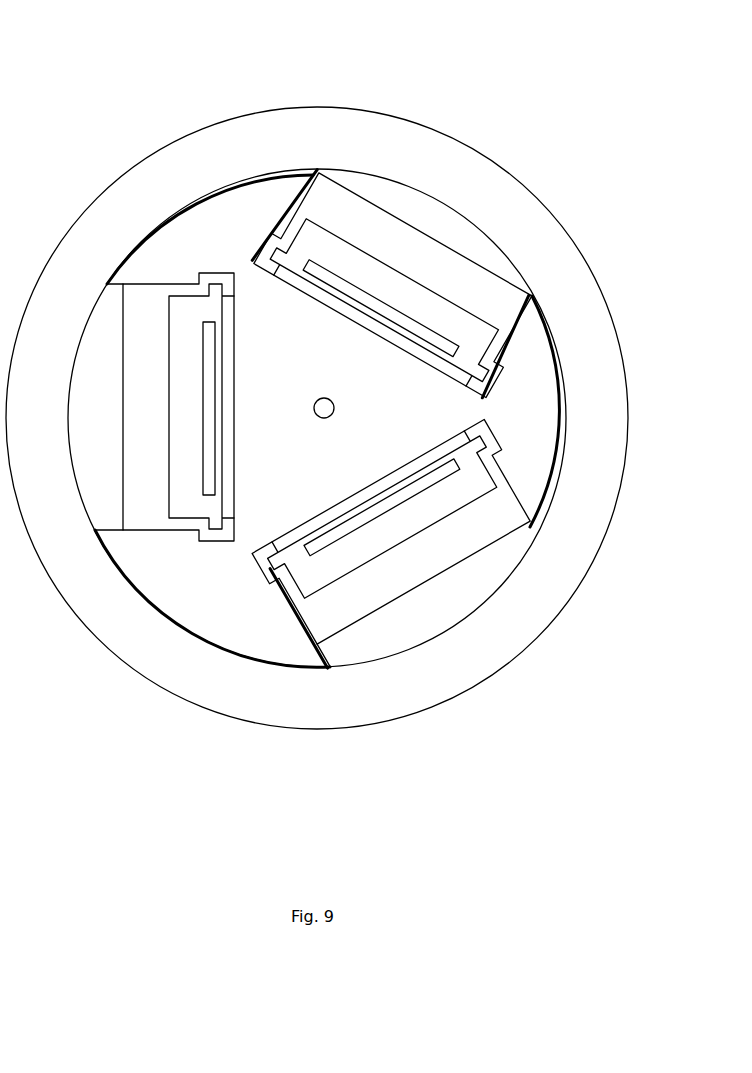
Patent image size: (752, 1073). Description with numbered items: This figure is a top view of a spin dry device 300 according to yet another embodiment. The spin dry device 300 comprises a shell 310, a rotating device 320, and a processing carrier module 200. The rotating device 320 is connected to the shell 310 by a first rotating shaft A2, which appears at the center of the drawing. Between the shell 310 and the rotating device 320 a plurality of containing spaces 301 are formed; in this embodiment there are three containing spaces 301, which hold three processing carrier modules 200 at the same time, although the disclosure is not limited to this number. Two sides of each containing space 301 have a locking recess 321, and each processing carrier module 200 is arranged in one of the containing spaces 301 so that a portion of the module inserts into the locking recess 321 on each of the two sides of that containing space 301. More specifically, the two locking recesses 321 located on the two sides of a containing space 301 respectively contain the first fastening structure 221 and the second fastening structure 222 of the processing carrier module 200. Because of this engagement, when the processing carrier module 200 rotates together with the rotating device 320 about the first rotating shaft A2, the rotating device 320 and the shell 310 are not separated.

The spin dry device 300 is at (66, 43).
The shell 310 is at (146, 187).
The rotating device 320 is at (222, 243).
The locking recess 321 is at (258, 232).
The processing carrier module 200 is at (347, 205).
The containing space 301 is at (407, 212).
The first fastening structure 221 is at (268, 243).
The second fastening structure 222 is at (500, 330).
The first rotating shaft A2 is at (322, 400).